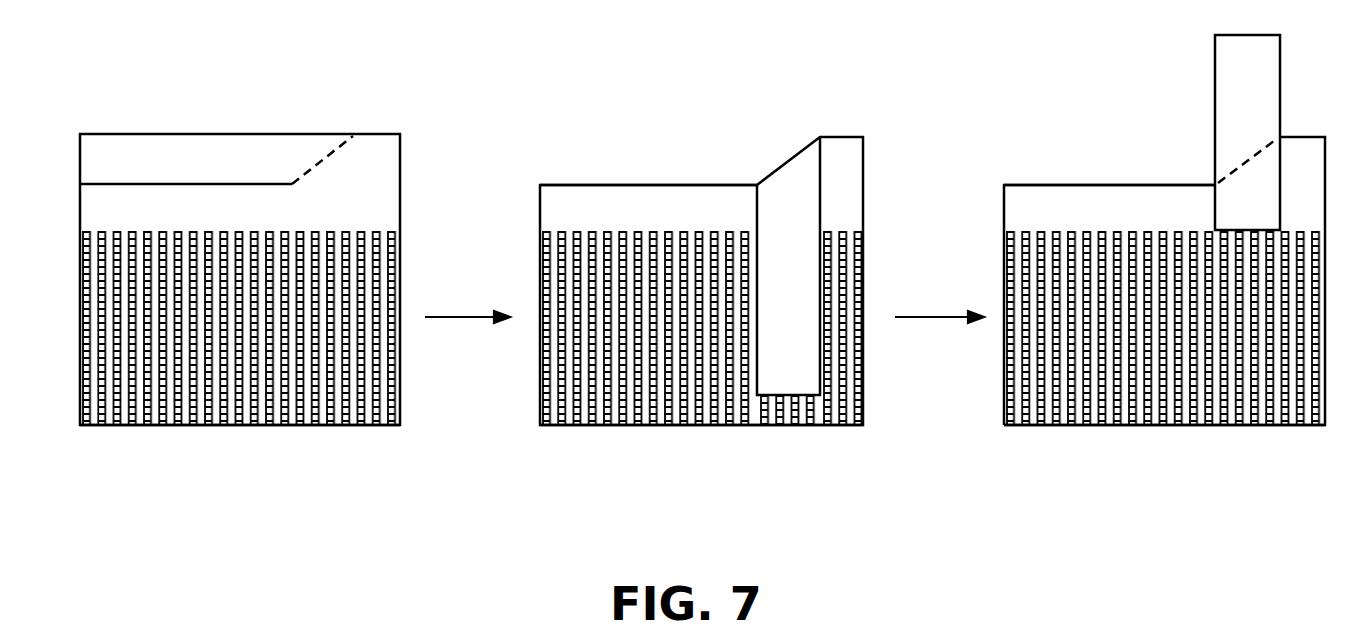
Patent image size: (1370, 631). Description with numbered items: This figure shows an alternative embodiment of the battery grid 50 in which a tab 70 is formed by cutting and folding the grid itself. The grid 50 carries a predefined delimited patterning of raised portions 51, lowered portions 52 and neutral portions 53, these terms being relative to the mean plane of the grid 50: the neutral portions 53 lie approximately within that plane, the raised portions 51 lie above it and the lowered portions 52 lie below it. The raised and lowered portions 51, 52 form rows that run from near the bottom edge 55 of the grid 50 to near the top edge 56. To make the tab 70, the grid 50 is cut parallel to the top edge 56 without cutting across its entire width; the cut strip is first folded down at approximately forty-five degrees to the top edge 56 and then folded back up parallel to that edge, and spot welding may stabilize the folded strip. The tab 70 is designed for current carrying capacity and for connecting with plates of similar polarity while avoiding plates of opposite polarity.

The grid 50 is at (195, 463).
The raised portions 51 is at (82, 232).
The lowered portions 52 is at (82, 237).
The neutral portions 53 is at (125, 420).
The bottom edge 55 is at (345, 428).
The top edge 56 is at (633, 184).
The tab 70 is at (180, 146).